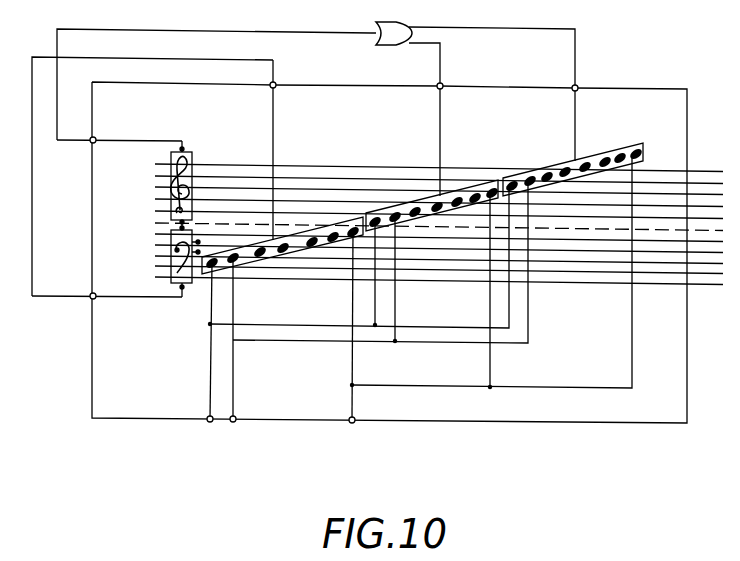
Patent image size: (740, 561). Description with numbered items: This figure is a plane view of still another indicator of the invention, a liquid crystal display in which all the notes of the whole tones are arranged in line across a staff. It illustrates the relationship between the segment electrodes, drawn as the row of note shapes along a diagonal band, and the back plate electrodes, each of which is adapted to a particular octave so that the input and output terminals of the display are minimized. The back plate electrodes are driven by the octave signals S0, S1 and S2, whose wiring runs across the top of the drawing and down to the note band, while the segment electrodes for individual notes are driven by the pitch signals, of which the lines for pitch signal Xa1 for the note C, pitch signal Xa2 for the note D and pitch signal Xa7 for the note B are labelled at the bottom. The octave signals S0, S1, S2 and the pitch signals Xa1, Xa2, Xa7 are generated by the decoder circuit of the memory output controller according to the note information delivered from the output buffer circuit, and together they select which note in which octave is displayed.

The octave signal S0 is at (289, 150).
The octave signal S1 is at (457, 130).
The octave signal S2 is at (592, 114).
The pitch signal Xa1 is at (203, 357).
The pitch signal Xa2 is at (247, 354).
The pitch signal Xa7 is at (355, 342).